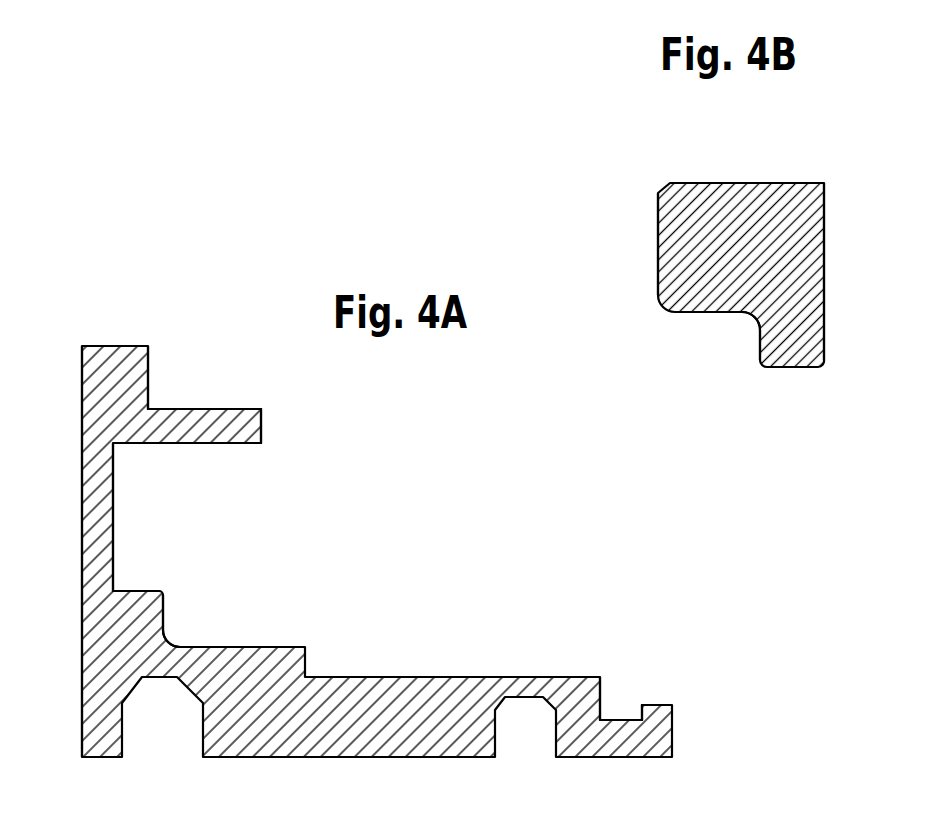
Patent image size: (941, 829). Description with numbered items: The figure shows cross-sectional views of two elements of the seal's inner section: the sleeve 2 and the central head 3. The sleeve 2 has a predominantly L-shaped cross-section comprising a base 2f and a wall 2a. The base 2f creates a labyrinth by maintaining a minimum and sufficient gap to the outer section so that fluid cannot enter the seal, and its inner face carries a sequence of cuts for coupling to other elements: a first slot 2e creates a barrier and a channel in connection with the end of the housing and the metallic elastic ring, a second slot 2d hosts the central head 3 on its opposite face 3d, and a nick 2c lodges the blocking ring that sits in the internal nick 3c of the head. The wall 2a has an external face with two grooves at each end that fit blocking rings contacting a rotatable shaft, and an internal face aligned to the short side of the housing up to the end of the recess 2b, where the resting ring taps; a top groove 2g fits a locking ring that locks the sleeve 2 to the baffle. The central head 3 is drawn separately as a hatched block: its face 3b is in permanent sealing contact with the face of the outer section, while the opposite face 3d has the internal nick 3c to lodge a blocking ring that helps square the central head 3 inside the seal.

In FIG. 4A, the sleeve 2 is at (403, 477).
In FIG. 4A, the wall 2a is at (412, 757).
In FIG. 4A, the recess 2b is at (312, 669).
In FIG. 4A, the nick 2c is at (172, 633).
In FIG. 4A, the second slot 2d is at (115, 553).
In FIG. 4A, the first slot 2e is at (152, 395).
In FIG. 4A, the base 2f is at (82, 538).
In FIG. 4A, the top groove 2g is at (620, 697).
In FIG. 4B, the central head 3 is at (867, 235).
In FIG. 4B, the face 3b is at (825, 282).
In FIG. 4B, the internal nick 3c is at (743, 322).
In FIG. 4B, the opposite face 3d is at (658, 242).